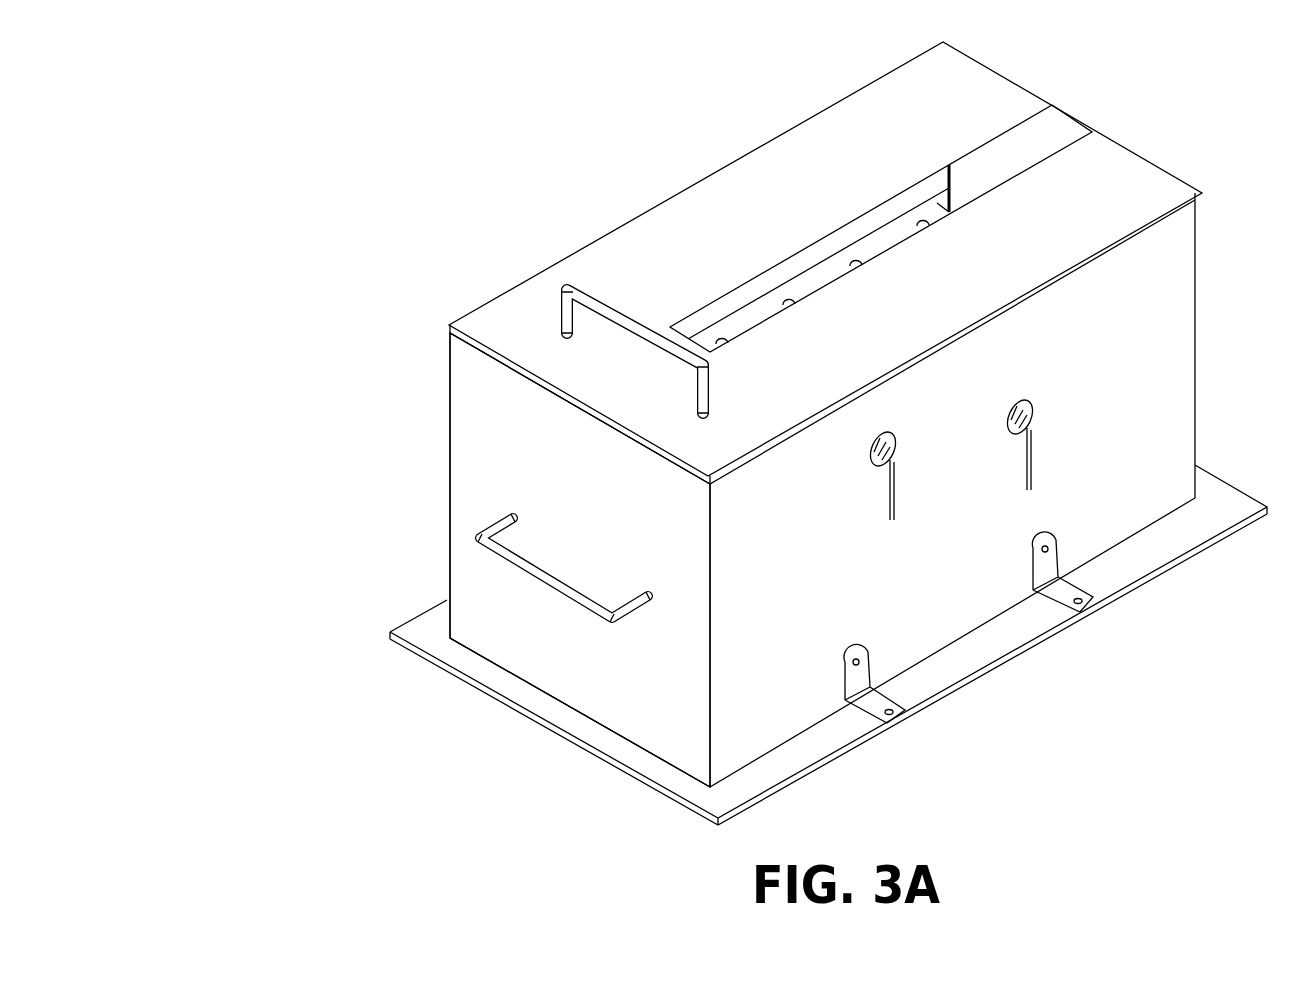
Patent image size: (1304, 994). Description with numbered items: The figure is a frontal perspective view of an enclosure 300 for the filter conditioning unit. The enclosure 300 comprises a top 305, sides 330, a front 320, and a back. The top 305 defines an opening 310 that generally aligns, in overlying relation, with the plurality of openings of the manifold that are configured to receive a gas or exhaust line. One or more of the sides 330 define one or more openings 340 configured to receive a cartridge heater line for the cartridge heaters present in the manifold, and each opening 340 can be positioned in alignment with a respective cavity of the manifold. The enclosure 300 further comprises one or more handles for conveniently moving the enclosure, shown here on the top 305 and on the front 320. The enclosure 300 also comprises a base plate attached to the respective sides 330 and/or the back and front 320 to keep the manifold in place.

The enclosure 300 is at (752, 433).
The top 305 is at (760, 156).
The opening 310 is at (1070, 125).
The front 320 is at (440, 541).
The sides 330 is at (901, 647).
The openings 340 is at (1047, 436).